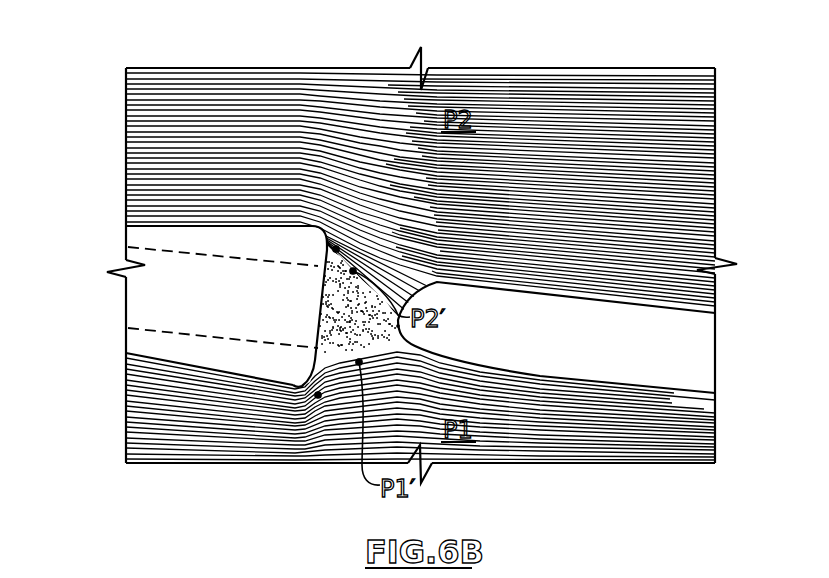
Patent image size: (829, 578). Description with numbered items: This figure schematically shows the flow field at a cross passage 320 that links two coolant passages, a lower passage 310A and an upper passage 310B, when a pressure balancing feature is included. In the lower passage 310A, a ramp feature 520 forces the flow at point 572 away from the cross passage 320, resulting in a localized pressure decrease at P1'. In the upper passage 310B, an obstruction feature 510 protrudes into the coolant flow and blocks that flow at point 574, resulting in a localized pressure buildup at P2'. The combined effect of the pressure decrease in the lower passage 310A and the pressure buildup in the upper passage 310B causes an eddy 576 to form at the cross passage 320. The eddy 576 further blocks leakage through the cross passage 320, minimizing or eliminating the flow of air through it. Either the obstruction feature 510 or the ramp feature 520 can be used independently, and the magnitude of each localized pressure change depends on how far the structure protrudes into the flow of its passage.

The upper passage 310B is at (143, 140).
The lower passage 310A is at (143, 412).
The obstruction feature 510 is at (180, 242).
The ramp feature 520 is at (192, 343).
The point 574 is at (336, 249).
The point 572 is at (318, 395).
The cross passage 320 is at (352, 298).
The eddy 576 is at (398, 326).